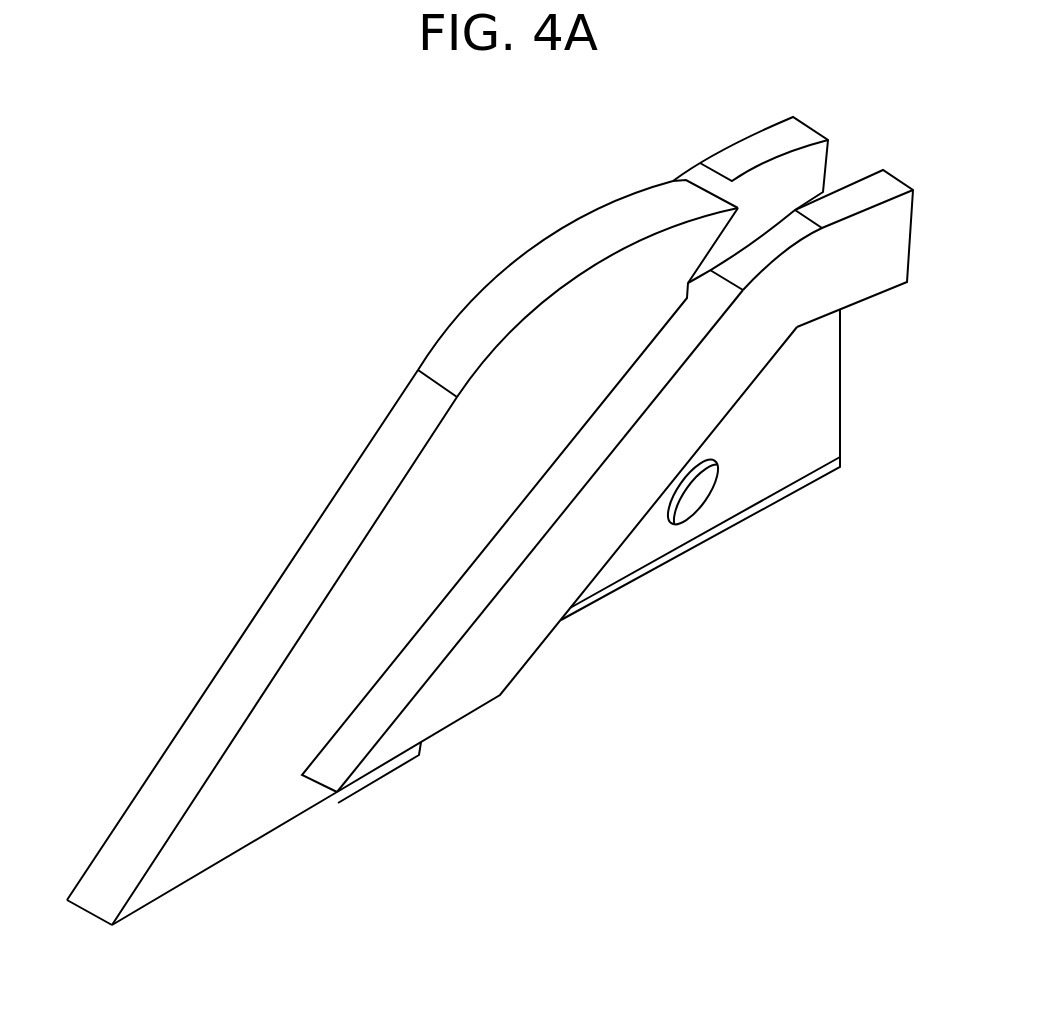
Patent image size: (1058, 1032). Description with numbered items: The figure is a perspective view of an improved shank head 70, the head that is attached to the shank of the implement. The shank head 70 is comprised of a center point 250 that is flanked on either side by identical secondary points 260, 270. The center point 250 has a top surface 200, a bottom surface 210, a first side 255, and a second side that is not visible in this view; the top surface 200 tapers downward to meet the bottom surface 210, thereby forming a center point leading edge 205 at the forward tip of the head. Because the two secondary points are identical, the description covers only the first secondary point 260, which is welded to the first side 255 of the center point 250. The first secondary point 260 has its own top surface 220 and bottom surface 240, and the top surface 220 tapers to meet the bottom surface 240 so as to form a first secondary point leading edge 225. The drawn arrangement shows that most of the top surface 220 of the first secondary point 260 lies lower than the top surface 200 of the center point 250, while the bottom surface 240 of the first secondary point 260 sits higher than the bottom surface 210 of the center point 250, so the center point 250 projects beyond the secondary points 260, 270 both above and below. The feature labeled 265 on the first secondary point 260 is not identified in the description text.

The shank head 70 is at (511, 200).
The top surface 200 is at (297, 573).
The center point leading edge 205 is at (92, 917).
The bottom surface 210 is at (167, 892).
The top surface 220 is at (535, 528).
The first secondary point leading edge 225 is at (337, 795).
The bottom surface 240 is at (477, 710).
The center point 250 is at (286, 800).
The first side 255 is at (387, 573).
The first secondary point 260 is at (548, 619).
The mounting hole 265 is at (602, 540).
The secondary point 270 is at (817, 160).